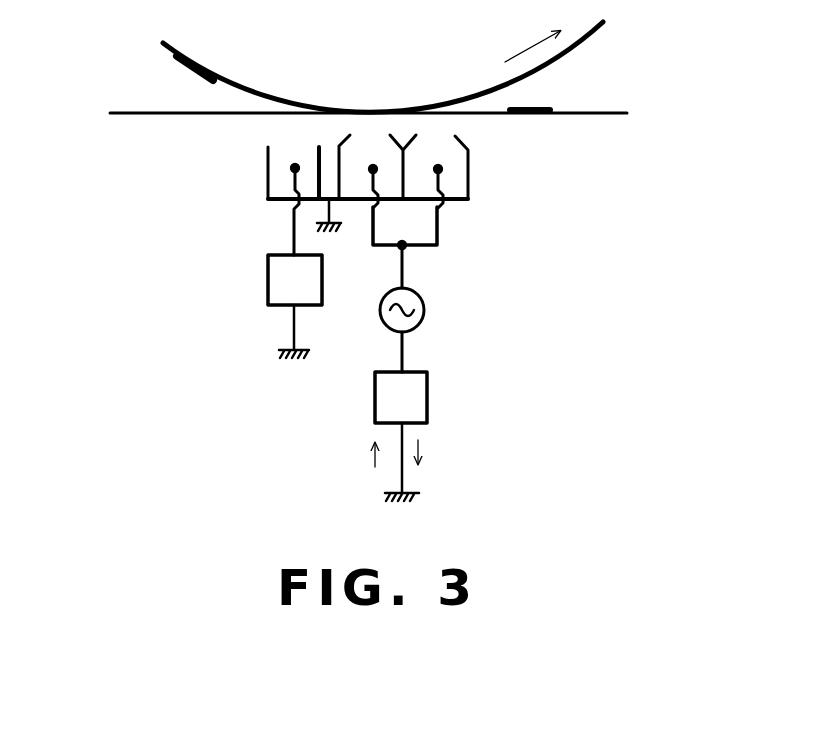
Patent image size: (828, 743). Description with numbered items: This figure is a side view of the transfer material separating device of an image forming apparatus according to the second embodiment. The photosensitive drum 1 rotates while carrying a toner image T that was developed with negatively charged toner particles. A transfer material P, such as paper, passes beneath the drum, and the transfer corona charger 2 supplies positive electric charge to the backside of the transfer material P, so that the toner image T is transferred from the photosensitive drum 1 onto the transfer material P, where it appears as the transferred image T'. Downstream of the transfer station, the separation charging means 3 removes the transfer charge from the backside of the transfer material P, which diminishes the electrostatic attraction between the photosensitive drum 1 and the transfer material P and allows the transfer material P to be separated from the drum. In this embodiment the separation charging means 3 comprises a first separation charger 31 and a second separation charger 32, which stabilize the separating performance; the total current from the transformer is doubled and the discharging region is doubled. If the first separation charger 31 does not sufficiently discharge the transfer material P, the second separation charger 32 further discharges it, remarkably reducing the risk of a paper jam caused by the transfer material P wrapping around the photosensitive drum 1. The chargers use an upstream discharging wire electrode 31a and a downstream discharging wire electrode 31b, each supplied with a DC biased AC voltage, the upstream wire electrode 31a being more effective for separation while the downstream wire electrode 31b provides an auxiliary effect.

The photosensitive drum 1 is at (168, 42).
The toner image T is at (164, 71).
The transferred toner image T' is at (558, 83).
The transfer material P is at (379, 119).
The transfer corona charger 2 is at (257, 228).
The separation charging means 3 is at (423, 271).
The first separation charger 31 is at (357, 202).
The discharging wire electrode 31a is at (373, 168).
The discharging wire electrode 31b is at (438, 168).
The second separation charger 32 is at (458, 205).